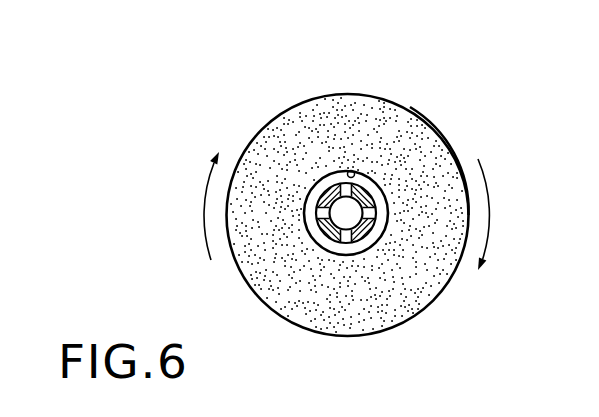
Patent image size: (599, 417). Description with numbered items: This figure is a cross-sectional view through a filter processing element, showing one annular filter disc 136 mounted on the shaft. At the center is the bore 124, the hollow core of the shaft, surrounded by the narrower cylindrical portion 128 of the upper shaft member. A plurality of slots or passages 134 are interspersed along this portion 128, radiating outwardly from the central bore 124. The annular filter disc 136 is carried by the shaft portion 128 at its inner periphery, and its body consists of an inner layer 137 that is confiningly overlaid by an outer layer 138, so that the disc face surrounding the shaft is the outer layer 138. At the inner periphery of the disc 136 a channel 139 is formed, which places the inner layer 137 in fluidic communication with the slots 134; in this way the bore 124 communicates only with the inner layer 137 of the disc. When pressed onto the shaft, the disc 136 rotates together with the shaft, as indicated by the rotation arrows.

The bore 124 is at (350, 213).
The narrower cylindrical portion 128 is at (365, 195).
The slots or passages 134 is at (342, 186).
The annular filter disc 136 is at (294, 96).
The inner layer 137 is at (420, 272).
The outer layer 138 is at (440, 137).
The channel 139 is at (355, 171).